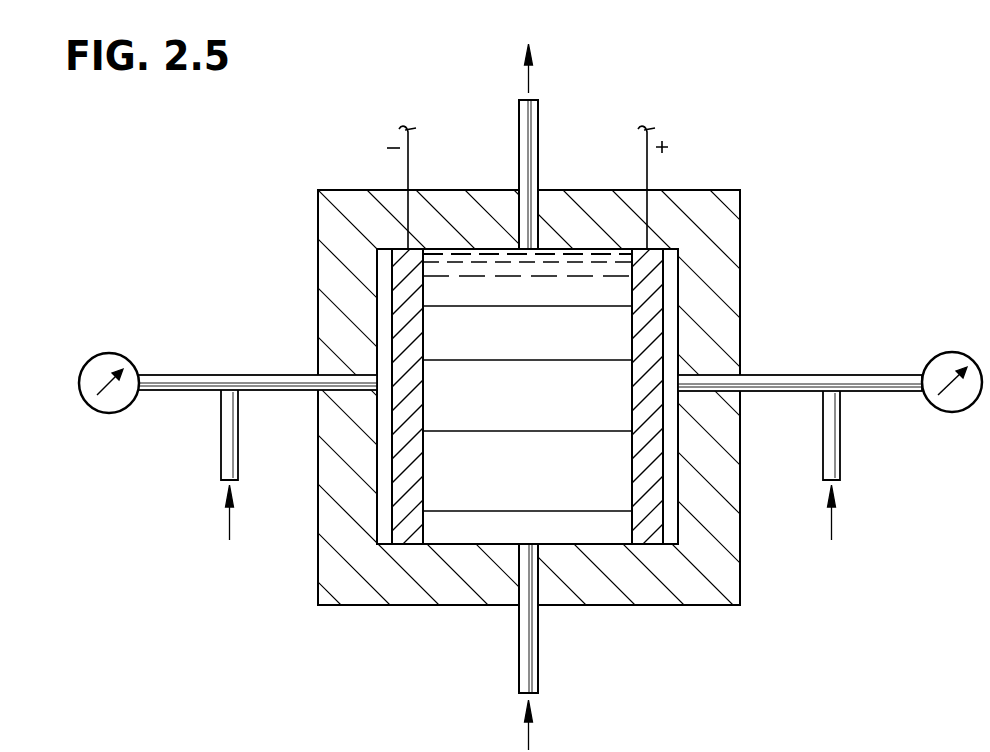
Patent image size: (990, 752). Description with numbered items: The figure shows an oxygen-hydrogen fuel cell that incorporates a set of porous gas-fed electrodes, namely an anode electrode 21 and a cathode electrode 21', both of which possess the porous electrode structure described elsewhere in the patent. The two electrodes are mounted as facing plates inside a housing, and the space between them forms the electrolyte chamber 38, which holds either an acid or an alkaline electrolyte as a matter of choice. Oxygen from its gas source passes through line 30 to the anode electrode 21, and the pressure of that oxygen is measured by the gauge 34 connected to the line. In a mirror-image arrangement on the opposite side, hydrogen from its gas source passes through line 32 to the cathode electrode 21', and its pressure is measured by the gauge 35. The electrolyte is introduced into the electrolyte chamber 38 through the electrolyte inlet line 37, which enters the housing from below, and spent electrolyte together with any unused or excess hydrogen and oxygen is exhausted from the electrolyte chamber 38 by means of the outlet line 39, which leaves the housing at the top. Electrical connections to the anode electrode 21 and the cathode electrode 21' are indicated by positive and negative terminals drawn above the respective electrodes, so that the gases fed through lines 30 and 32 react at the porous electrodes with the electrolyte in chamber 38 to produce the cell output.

The anode electrode 21 is at (646, 335).
The cathode electrode 21' is at (406, 335).
The oxygen line 30 is at (828, 374).
The hydrogen line 32 is at (232, 375).
The pressure gauge 34 is at (947, 352).
The pressure gauge 35 is at (108, 352).
The electrolyte inlet line 37 is at (622, 698).
The electrolyte chamber 38 is at (463, 287).
The outlet line 39 is at (538, 128).